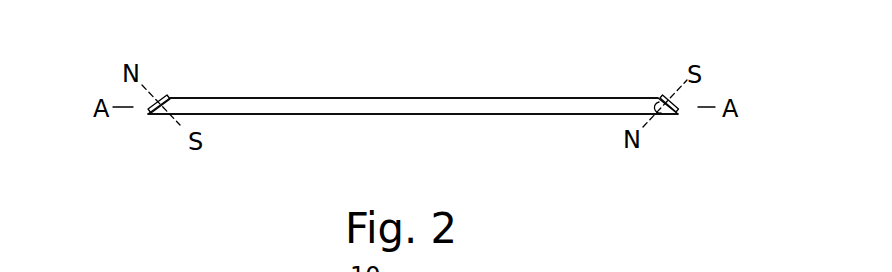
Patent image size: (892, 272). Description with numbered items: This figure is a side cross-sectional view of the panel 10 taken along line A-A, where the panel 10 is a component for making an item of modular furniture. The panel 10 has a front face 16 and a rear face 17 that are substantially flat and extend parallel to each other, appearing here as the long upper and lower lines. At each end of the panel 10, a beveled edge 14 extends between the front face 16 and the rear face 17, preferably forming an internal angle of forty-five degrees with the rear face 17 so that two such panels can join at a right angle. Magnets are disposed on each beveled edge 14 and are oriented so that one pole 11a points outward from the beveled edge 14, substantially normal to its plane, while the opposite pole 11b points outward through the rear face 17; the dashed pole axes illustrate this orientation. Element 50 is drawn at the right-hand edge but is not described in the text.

The panel 10 is at (297, 108).
The pole of the magnet 11a is at (150, 85).
The opposite pole 11b is at (173, 123).
The beveled edge 14 is at (666, 88).
The front face 16 is at (440, 98).
The rear face 17 is at (357, 114).
The adhesive 50 is at (656, 105).